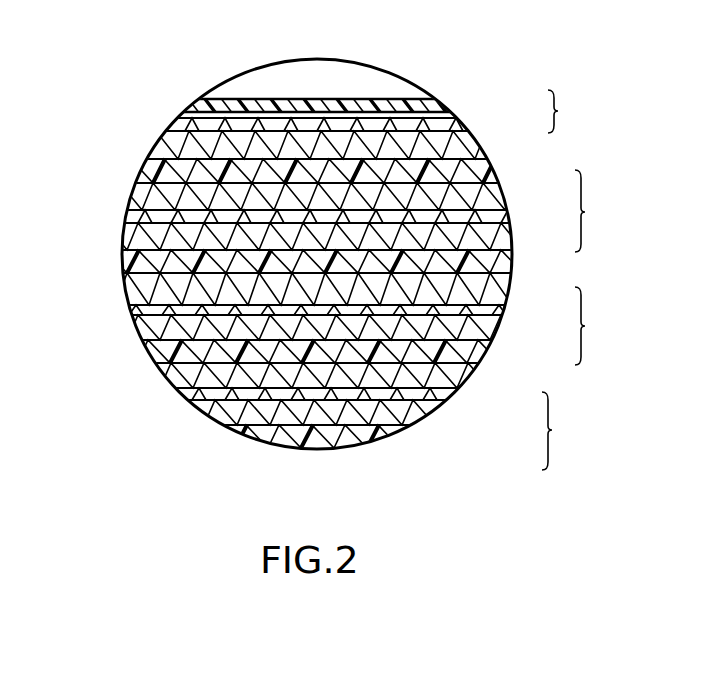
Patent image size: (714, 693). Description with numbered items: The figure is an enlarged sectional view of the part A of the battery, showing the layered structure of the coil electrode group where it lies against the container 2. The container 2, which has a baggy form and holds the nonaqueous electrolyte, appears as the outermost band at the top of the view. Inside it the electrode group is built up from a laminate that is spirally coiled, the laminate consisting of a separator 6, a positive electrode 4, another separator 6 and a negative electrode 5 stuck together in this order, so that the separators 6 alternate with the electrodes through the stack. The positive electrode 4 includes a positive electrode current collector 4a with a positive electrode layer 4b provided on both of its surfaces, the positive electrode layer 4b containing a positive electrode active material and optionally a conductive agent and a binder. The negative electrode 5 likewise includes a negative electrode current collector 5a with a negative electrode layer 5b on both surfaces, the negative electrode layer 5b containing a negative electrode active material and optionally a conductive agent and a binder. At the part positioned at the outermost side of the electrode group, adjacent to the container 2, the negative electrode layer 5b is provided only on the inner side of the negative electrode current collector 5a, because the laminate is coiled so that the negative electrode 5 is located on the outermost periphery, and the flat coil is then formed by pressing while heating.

The part A is at (230, 98).
The container 2 is at (430, 104).
The positive electrode 4 is at (570, 320).
The positive electrode current collector 4a is at (487, 216).
The positive electrode layer 4b is at (489, 192).
The negative electrode 5 is at (573, 227).
The negative electrode current collector 5a is at (467, 125).
The negative electrode layer 5b is at (462, 150).
The separator 6 is at (160, 173).